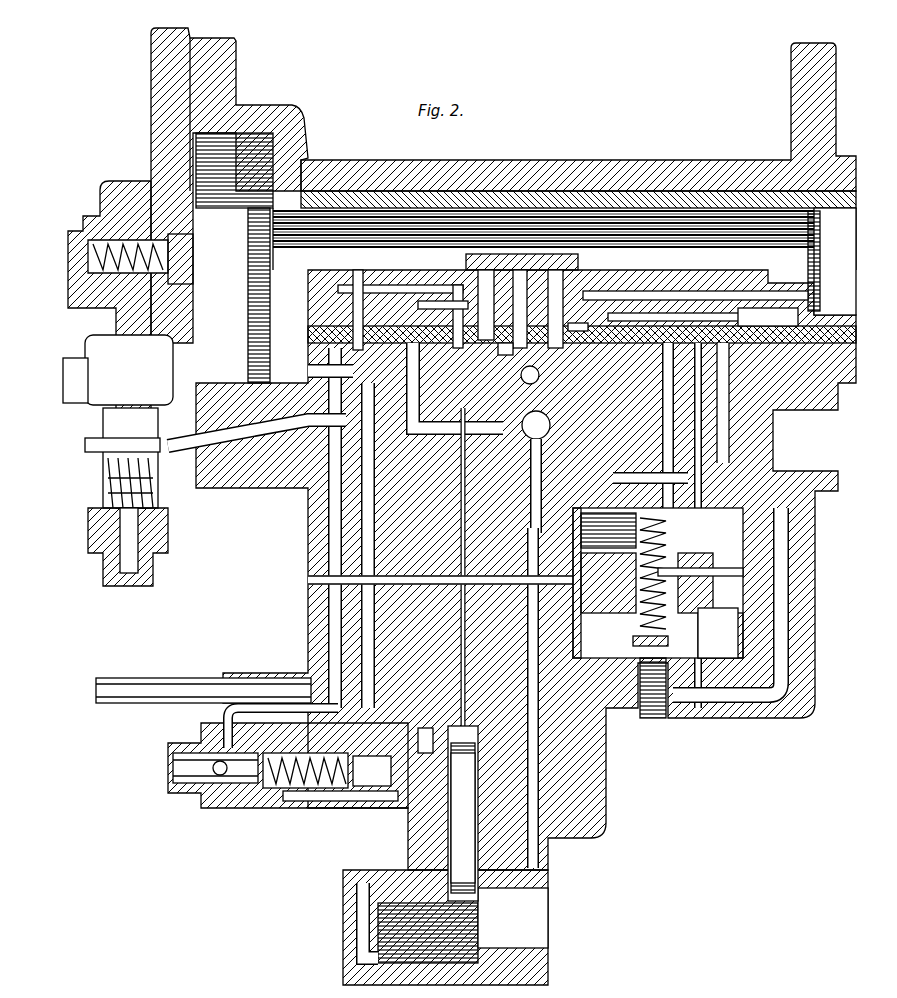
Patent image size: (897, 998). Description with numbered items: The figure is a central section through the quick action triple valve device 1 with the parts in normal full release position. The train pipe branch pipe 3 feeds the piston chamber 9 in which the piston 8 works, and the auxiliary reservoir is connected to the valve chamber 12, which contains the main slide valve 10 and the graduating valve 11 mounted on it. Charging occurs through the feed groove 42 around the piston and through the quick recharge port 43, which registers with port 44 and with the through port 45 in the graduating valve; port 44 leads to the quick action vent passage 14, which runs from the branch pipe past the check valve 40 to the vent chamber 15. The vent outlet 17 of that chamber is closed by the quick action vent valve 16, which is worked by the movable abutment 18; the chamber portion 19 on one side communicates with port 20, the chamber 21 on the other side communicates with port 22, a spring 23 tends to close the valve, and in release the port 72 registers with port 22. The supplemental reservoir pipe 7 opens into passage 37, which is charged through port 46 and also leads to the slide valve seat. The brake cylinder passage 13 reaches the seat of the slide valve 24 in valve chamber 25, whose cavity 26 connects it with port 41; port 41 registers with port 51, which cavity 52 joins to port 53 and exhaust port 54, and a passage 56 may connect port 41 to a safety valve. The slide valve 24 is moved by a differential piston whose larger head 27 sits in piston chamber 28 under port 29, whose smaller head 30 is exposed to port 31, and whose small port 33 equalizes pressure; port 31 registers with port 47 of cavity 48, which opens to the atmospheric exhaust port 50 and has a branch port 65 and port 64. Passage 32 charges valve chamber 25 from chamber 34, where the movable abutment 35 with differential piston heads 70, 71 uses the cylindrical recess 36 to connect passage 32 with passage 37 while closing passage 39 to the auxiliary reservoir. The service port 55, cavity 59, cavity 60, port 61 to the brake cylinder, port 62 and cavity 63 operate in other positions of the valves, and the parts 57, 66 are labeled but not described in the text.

The quick action triple valve device 1 is at (628, 176).
The branch pipe 3 is at (90, 378).
The supplemental reservoir pipe 7 is at (152, 672).
The piston 8 is at (240, 308).
The piston chamber 9 is at (228, 365).
The main slide valve 10 is at (735, 272).
The graduating valve 11 is at (575, 268).
The valve chamber 12 is at (826, 268).
The brake cylinder passage 13 is at (780, 584).
The quick action vent passage 14 is at (290, 425).
The vent chamber 15 is at (712, 695).
The quick action vent valve 16 is at (662, 640).
The vent outlet 17 is at (646, 690).
The movable abutment 18 is at (680, 545).
The chamber portion 19 is at (622, 490).
The port 20 is at (695, 470).
The chamber 21 is at (700, 566).
The port 22 is at (545, 565).
The spring 23 is at (650, 508).
The slide valve 24 is at (725, 360).
The valve chamber 25 is at (463, 813).
The cavity 26 is at (463, 835).
The larger piston head 27 is at (480, 905).
The piston chamber 28 is at (480, 945).
The port 29 is at (348, 886).
The smaller piston head 30 is at (430, 712).
The port 31 is at (560, 365).
The passage 32 is at (328, 793).
The small port 33 is at (375, 740).
The chamber 34 is at (365, 780).
The movable abutment 35 is at (245, 775).
The cylindrical recess 36 is at (305, 780).
The passage 37 is at (322, 632).
The passage 39 is at (175, 775).
The check valve 40 is at (106, 430).
The port 41 is at (545, 380).
The feed groove 42 is at (288, 103).
The quick recharge port 43 is at (415, 275).
The port 44 is at (465, 355).
The through port 45 is at (475, 262).
The port 46 is at (360, 275).
The port 47 is at (625, 305).
The cavity 48 is at (640, 283).
The atmospheric exhaust port 50 is at (472, 371).
The port 51 is at (612, 283).
The cavity 52 is at (540, 262).
The port 53 is at (505, 340).
The exhaust port 54 is at (505, 345).
The service port 55 is at (522, 376).
The passage 56 is at (514, 412).
The passage 57 is at (305, 353).
The cavity 59 is at (588, 332).
The cavity 60 is at (748, 315).
The port 61 is at (668, 378).
The port 62 is at (685, 283).
The cavity 63 is at (505, 262).
The port 64 is at (490, 268).
The branch port 65 is at (450, 305).
The passage 66 is at (300, 363).
The differential piston head 70 is at (262, 740).
The differential piston head 71 is at (355, 660).
The port 72 is at (352, 280).